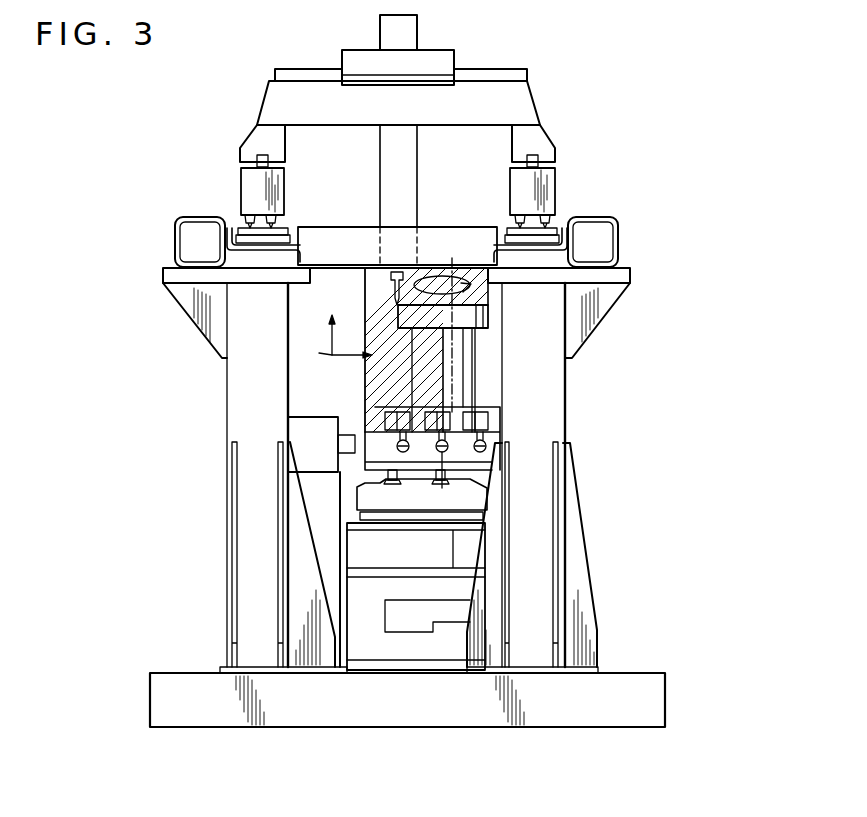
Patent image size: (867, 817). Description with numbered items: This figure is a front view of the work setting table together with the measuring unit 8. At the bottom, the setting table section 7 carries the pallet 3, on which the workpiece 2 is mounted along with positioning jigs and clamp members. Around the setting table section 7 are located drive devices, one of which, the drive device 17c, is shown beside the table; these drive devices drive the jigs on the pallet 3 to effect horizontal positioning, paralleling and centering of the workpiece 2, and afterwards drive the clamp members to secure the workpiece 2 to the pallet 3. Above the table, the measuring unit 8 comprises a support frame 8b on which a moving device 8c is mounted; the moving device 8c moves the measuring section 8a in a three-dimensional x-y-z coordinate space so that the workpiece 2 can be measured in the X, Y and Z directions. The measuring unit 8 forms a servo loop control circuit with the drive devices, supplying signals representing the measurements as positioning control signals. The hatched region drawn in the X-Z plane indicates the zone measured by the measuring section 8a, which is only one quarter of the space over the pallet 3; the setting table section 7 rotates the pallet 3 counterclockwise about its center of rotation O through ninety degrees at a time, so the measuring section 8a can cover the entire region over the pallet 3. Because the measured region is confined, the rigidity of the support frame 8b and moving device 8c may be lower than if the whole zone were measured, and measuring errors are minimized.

The workpiece 2 is at (475, 372).
The pallet 3 is at (490, 404).
The setting table section 7 is at (357, 487).
The measuring unit 8 is at (466, 61).
The measuring section 8a is at (388, 286).
The support frame 8b is at (233, 344).
The moving device 8c is at (540, 108).
The drive device 17c is at (298, 425).
The center of rotation O is at (444, 262).